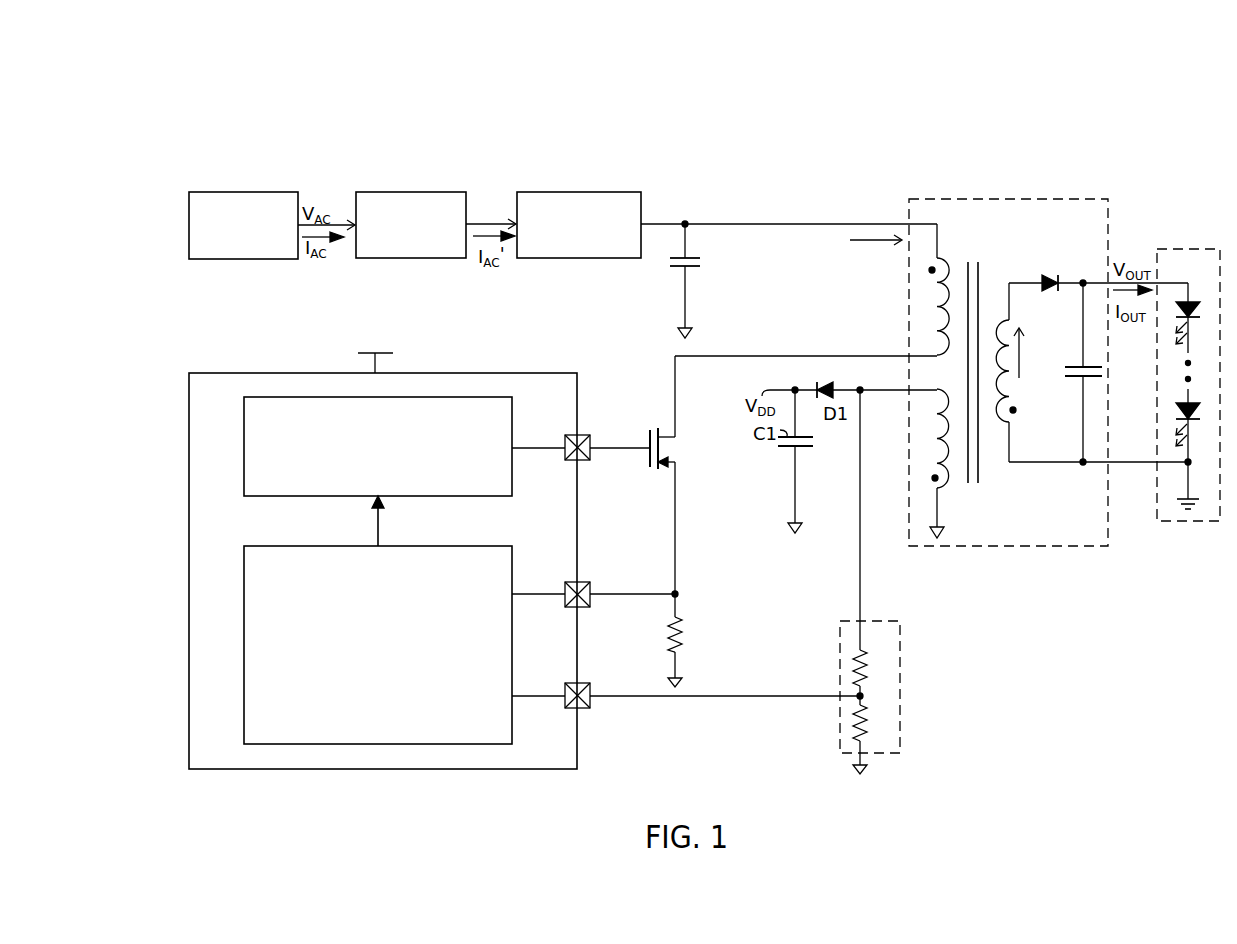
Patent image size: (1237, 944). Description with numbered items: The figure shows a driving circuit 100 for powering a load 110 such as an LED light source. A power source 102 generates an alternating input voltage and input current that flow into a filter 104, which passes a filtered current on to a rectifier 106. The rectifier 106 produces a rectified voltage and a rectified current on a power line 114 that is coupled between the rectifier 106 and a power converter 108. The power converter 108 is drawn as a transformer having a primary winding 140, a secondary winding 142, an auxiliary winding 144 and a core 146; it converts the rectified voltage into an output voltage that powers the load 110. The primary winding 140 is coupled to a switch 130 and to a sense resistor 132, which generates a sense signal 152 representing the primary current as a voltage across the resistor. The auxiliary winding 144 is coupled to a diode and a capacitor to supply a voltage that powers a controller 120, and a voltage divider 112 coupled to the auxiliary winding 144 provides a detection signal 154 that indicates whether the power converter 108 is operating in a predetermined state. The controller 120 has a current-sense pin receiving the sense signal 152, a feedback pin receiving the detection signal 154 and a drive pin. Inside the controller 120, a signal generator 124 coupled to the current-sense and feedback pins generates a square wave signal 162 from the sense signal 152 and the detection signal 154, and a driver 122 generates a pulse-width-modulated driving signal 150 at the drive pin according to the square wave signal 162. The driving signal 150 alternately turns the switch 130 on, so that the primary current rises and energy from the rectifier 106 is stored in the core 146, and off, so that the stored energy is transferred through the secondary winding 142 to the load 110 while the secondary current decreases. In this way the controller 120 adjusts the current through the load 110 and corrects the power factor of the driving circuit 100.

The driving circuit 100 is at (205, 127).
The power source 102 is at (236, 192).
The filter 104 is at (396, 192).
The rectifier 106 is at (536, 192).
The power converter 108 is at (937, 199).
The load 110 is at (1197, 249).
The voltage divider 112 is at (840, 642).
The power line 114 is at (790, 225).
The controller 120 is at (230, 373).
The driver 122 is at (244, 442).
The signal generator 124 is at (244, 642).
The switch 130 is at (684, 445).
The sense resistor 132 is at (677, 618).
The primary winding 140 is at (944, 258).
The secondary winding 142 is at (999, 318).
The auxiliary winding 144 is at (952, 381).
The core 146 is at (978, 483).
The driving signal 150 is at (636, 448).
The sense signal 152 is at (636, 594).
The detection signal 154 is at (775, 696).
The square wave signal 162 is at (378, 530).